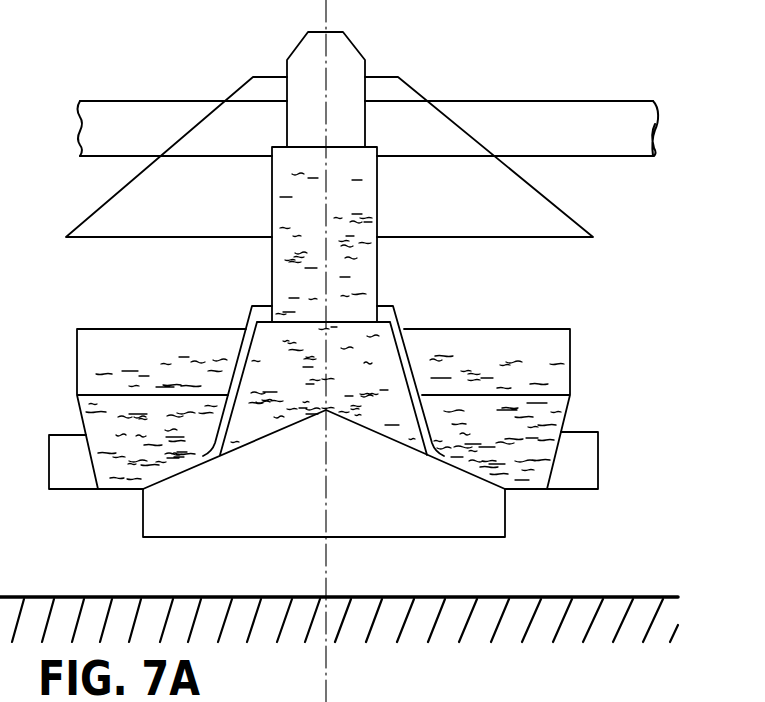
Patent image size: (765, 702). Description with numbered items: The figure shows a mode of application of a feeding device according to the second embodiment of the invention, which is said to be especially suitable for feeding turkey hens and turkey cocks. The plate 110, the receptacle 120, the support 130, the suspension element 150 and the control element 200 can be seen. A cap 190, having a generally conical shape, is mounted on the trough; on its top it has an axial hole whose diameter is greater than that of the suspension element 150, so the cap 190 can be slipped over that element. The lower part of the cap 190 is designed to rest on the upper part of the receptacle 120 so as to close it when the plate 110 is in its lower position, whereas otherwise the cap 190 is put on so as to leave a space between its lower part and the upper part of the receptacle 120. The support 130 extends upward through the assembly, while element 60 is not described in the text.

The plate 60 is at (517, 120).
The cap 190 is at (548, 198).
The support 130 is at (342, 120).
The suspension element 150 is at (363, 268).
The control element 200 is at (408, 356).
The receptacle 120 is at (570, 368).
The plate 110 is at (598, 463).